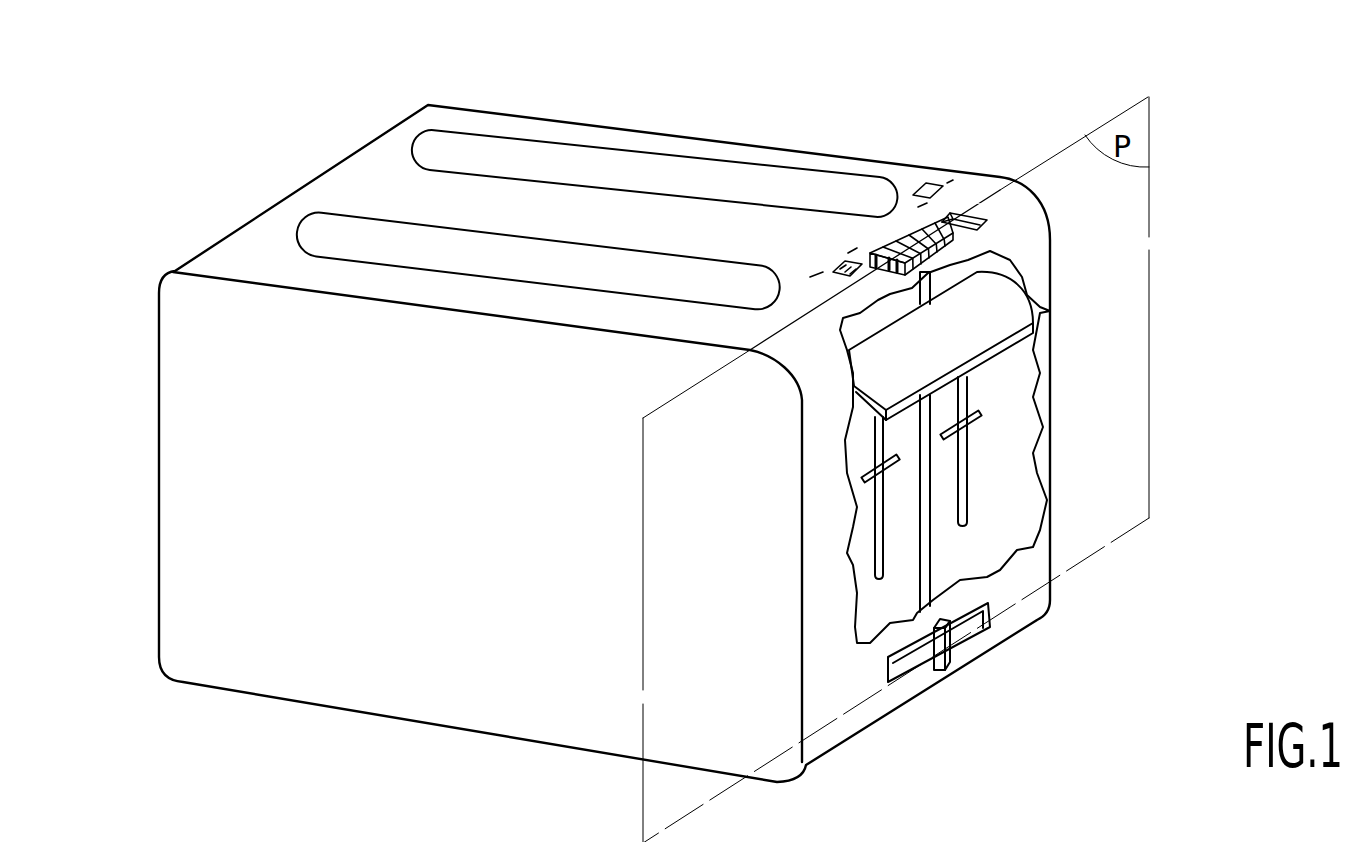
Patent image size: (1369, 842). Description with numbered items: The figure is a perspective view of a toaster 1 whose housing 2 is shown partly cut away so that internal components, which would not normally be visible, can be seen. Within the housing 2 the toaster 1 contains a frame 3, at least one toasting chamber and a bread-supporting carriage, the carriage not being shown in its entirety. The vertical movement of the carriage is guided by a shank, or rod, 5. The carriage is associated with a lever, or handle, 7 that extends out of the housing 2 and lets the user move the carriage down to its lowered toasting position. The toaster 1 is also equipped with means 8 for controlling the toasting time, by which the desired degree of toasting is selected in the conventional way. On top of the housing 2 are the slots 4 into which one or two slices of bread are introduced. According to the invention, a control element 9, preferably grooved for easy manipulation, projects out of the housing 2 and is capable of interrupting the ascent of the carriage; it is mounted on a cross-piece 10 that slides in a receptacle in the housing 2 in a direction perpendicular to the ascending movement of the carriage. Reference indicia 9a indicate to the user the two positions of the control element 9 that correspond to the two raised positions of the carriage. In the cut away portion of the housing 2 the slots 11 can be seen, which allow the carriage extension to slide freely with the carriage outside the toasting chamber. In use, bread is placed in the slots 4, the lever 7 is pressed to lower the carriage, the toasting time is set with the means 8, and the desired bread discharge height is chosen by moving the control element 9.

The toaster 1 is at (328, 148).
The housing 2 is at (975, 187).
The frame 3 is at (950, 530).
The slots 4 is at (335, 233).
The shank, or rod 5 is at (918, 590).
The lever, or handle 7 is at (1003, 307).
The means for controlling the toasting time 8 is at (947, 657).
The control element 9 is at (907, 230).
The reference indicia 9a is at (838, 262).
The cross-piece 10 is at (972, 217).
The slots 11 is at (963, 477).